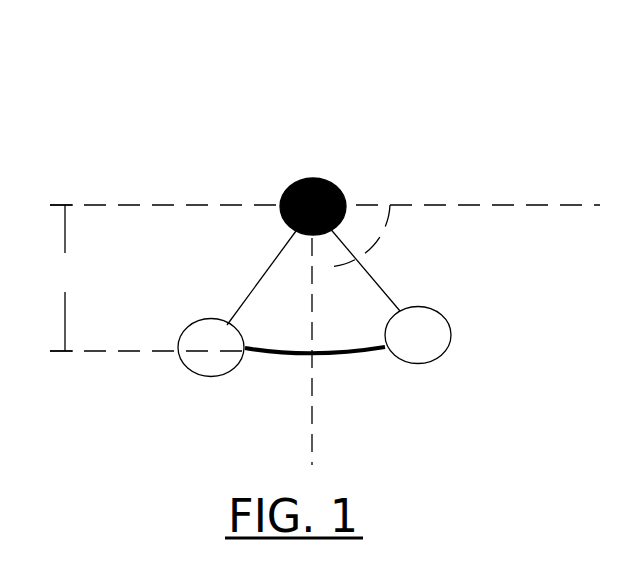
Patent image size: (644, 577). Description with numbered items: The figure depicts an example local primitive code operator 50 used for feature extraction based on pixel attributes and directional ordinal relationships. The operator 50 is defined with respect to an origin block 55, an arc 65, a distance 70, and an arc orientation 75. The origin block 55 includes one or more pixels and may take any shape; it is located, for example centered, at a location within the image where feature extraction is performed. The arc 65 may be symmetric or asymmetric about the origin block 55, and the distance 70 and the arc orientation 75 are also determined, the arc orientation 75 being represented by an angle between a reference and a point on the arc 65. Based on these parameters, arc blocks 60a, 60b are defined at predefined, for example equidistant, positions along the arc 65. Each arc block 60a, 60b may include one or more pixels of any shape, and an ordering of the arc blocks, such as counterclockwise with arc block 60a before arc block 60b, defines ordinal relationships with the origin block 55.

The local primitive code operator 50 is at (415, 79).
The origin block 55 is at (320, 178).
The arc block 60a is at (196, 323).
The arc block 60b is at (449, 348).
The arc 65 is at (367, 354).
The distance 70 is at (64, 278).
The arc orientation 75 is at (386, 224).